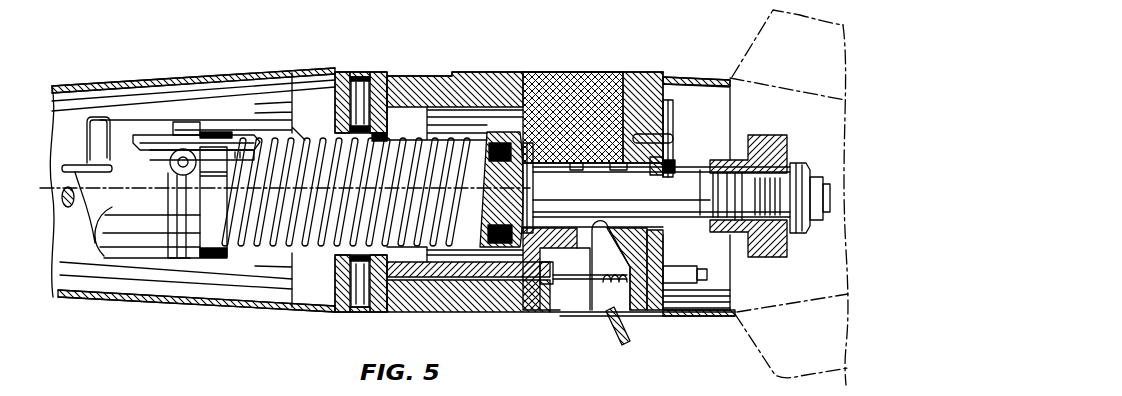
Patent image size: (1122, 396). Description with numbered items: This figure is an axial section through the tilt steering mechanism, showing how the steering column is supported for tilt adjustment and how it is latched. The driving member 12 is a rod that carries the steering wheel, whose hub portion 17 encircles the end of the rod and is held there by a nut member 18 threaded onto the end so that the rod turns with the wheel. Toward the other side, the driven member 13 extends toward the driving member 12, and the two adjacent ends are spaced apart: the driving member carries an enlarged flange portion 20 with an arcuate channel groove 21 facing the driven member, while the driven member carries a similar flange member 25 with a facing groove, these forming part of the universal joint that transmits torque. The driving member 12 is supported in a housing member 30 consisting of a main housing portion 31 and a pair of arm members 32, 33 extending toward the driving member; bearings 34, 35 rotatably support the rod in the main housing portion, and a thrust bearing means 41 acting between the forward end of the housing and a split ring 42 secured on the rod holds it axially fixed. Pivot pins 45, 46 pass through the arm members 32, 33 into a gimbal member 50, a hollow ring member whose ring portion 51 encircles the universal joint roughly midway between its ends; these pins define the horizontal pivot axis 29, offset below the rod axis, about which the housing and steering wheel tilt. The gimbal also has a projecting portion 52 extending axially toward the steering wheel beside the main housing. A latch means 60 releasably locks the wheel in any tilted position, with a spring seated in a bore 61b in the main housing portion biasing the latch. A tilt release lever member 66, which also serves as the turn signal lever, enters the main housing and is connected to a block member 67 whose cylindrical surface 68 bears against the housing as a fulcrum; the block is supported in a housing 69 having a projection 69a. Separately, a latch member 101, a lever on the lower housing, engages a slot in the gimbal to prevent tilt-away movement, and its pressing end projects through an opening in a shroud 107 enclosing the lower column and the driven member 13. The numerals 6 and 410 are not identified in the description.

The bolt end 6 is at (803, 198).
The driving member 12 is at (692, 205).
The driven member 13 is at (72, 233).
The hub portion 17 is at (767, 138).
The nut member 18 is at (798, 227).
The flange portion 20 is at (573, 79).
The arcuate channel groove 21 is at (487, 135).
The flange member 25 is at (216, 242).
The pivot axis 29 is at (365, 57).
The housing member 30 is at (500, 65).
The main housing portion 31 is at (627, 90).
The arm member 32 is at (417, 90).
The arm member 33 is at (408, 300).
The bearing 34 is at (596, 141).
The bearing 35 is at (633, 139).
The thrust bearing means 41 is at (673, 137).
The split ring 42 is at (675, 163).
The pivot pin 45 is at (352, 100).
The pivot pin 46 is at (338, 312).
The gimbal member 50 is at (337, 267).
The ring portion 51 is at (337, 124).
The projecting portion 52 is at (463, 282).
The latch means 60 is at (578, 275).
The bore 61b is at (562, 302).
The tilt release lever member 66 is at (621, 345).
The block member 67 is at (630, 302).
The cylindrical surface 68 is at (612, 232).
The housing 69 is at (683, 313).
The projection 69a is at (733, 288).
The latch member 101 is at (152, 138).
The shroud 107 is at (145, 306).
The top edge 410 is at (573, 89).